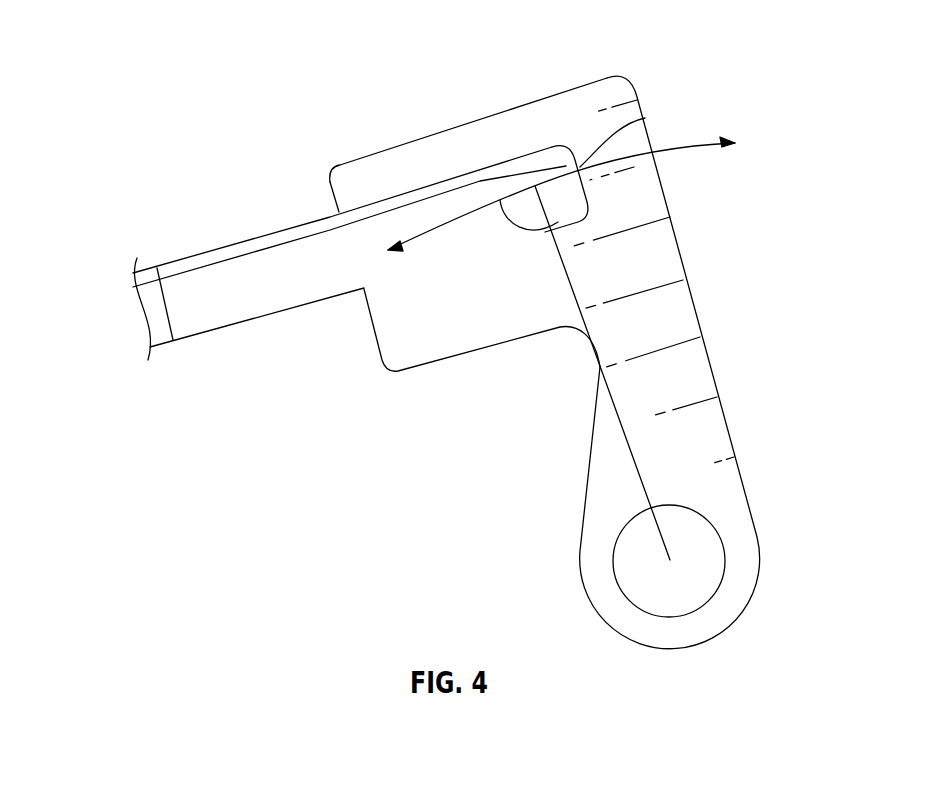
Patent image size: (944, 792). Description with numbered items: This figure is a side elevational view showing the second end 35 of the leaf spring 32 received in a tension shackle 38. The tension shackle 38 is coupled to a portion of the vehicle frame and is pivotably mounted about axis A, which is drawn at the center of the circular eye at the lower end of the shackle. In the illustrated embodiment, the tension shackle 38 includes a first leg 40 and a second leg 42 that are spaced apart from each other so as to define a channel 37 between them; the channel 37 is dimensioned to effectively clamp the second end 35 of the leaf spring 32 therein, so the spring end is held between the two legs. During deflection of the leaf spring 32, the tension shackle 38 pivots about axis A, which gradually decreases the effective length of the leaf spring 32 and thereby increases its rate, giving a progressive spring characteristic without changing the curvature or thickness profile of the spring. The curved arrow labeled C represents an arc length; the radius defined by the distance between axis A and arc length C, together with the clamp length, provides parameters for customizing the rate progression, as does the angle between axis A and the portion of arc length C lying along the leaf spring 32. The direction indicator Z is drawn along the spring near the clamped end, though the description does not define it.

The leaf spring 32 is at (268, 308).
The second end of the leaf spring 35 is at (574, 170).
The channel 37 is at (645, 118).
The tension shackle 38 is at (681, 318).
The first leg 40 is at (467, 140).
The second leg 42 is at (412, 358).
The axis A is at (668, 548).
The arc length C is at (703, 142).
The direction of movement Z is at (532, 228).